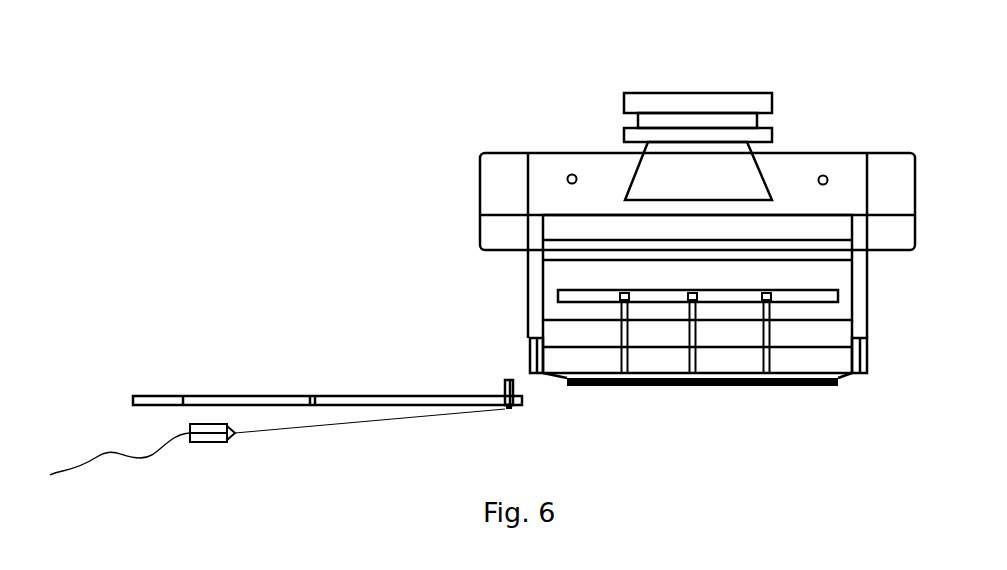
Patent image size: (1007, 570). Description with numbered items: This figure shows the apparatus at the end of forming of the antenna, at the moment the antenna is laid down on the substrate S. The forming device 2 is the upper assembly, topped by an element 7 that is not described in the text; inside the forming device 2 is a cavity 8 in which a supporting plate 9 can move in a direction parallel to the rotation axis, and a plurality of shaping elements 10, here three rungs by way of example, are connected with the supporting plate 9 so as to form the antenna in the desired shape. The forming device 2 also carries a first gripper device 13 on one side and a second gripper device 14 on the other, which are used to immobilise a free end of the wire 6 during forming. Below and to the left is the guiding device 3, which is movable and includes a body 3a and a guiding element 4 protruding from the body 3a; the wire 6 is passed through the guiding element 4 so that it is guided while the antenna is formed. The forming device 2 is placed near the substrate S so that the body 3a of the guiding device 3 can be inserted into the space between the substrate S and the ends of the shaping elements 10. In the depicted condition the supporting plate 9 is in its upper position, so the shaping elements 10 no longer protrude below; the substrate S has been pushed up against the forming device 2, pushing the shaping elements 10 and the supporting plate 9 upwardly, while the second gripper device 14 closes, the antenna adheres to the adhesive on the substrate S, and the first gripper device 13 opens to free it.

The forming device 2 is at (800, 169).
The guiding device 3 is at (237, 365).
The body 3a is at (292, 392).
The guiding element 4 is at (503, 382).
The wire 6 is at (388, 420).
The mounting stack 7 is at (708, 105).
The cavity 8 is at (663, 278).
The supporting plate 9 is at (580, 298).
The shaping elements 10 is at (623, 337).
The first gripper device 13 is at (530, 353).
The second gripper device 14 is at (867, 350).
The substrate S is at (737, 387).